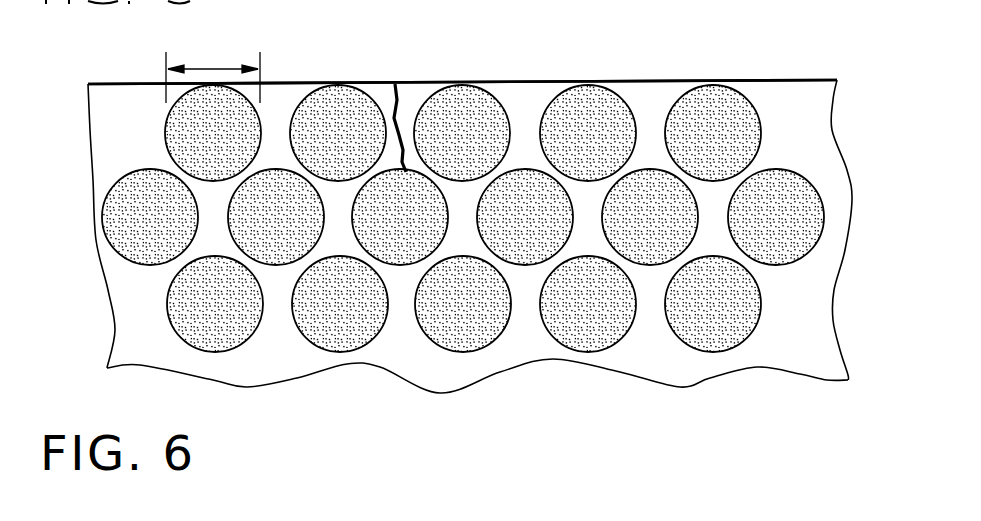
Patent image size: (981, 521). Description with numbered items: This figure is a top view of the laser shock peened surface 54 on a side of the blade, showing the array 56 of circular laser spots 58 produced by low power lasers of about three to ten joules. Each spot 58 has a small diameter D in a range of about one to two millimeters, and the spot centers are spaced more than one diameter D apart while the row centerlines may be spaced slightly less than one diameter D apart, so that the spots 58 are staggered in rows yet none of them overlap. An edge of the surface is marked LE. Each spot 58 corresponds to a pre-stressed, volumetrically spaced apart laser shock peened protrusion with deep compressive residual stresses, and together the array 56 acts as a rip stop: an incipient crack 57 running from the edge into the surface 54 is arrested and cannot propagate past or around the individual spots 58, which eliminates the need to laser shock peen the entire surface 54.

The laser shock peened surface 54 is at (786, 90).
The array of laser shock peened protrusions 56 is at (477, 83).
The incipient crack 57 is at (405, 110).
The laser spot 58 is at (587, 98).
The leading edge LE is at (687, 81).
The diameter D is at (210, 68).